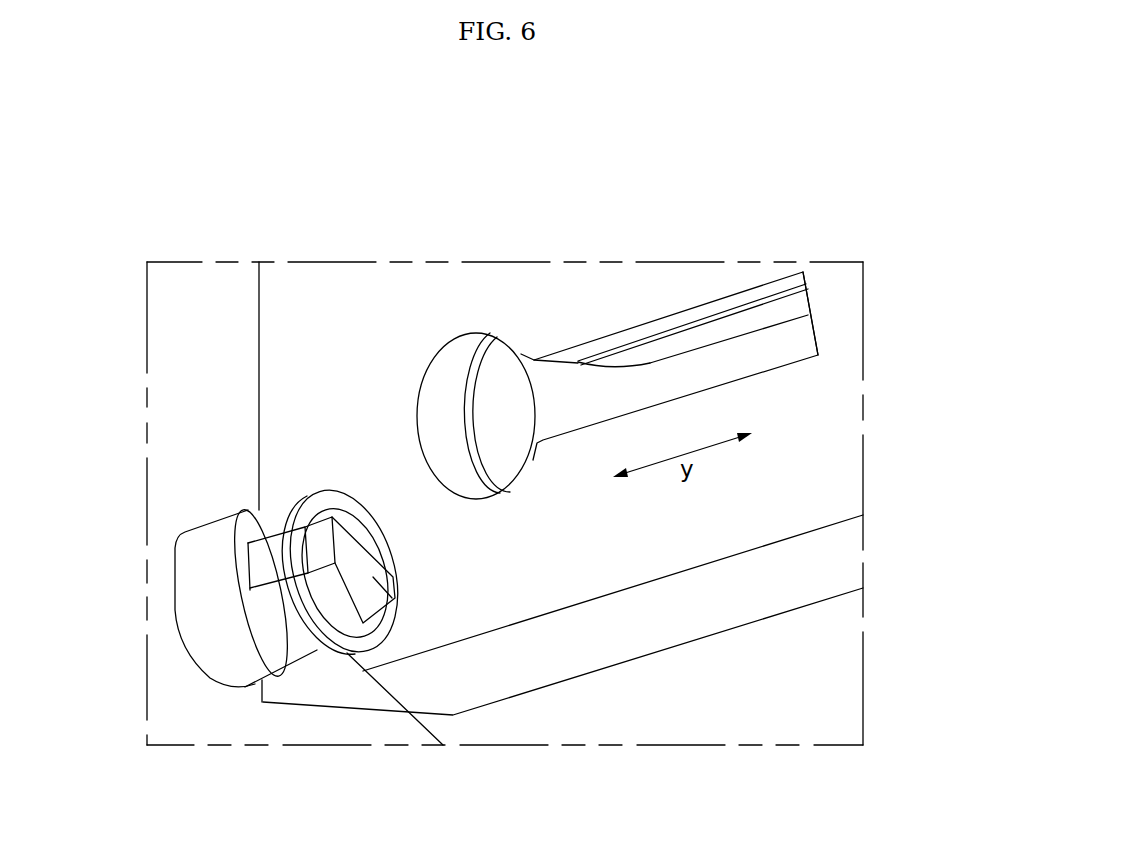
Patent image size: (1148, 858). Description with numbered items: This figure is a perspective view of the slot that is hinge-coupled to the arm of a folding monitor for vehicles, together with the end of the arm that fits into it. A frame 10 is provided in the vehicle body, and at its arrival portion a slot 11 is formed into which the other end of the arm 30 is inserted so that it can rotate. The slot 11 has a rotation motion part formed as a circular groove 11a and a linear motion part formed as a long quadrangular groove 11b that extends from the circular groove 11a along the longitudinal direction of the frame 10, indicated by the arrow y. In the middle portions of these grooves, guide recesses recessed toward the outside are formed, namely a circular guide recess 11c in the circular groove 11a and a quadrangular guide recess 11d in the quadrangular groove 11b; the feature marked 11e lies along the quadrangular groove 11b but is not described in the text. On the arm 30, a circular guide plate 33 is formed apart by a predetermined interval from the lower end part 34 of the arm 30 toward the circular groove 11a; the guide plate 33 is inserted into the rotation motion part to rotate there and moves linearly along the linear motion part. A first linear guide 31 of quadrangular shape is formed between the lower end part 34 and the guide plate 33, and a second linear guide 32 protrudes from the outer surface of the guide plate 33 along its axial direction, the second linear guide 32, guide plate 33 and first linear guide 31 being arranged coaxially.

The frame 10 is at (713, 278).
The slot 11 is at (566, 372).
The circular groove 11a is at (508, 405).
The quadrangular groove 11b is at (662, 385).
The circular guide recess 11c is at (460, 387).
The quadrangular guide recess 11d is at (807, 288).
The guide groove 11e is at (765, 294).
The arm 30 is at (331, 694).
The first linear guide 31 is at (263, 562).
The second linear guide 32 is at (393, 577).
The guide plate 33 is at (315, 607).
The lower end part 34 is at (237, 637).